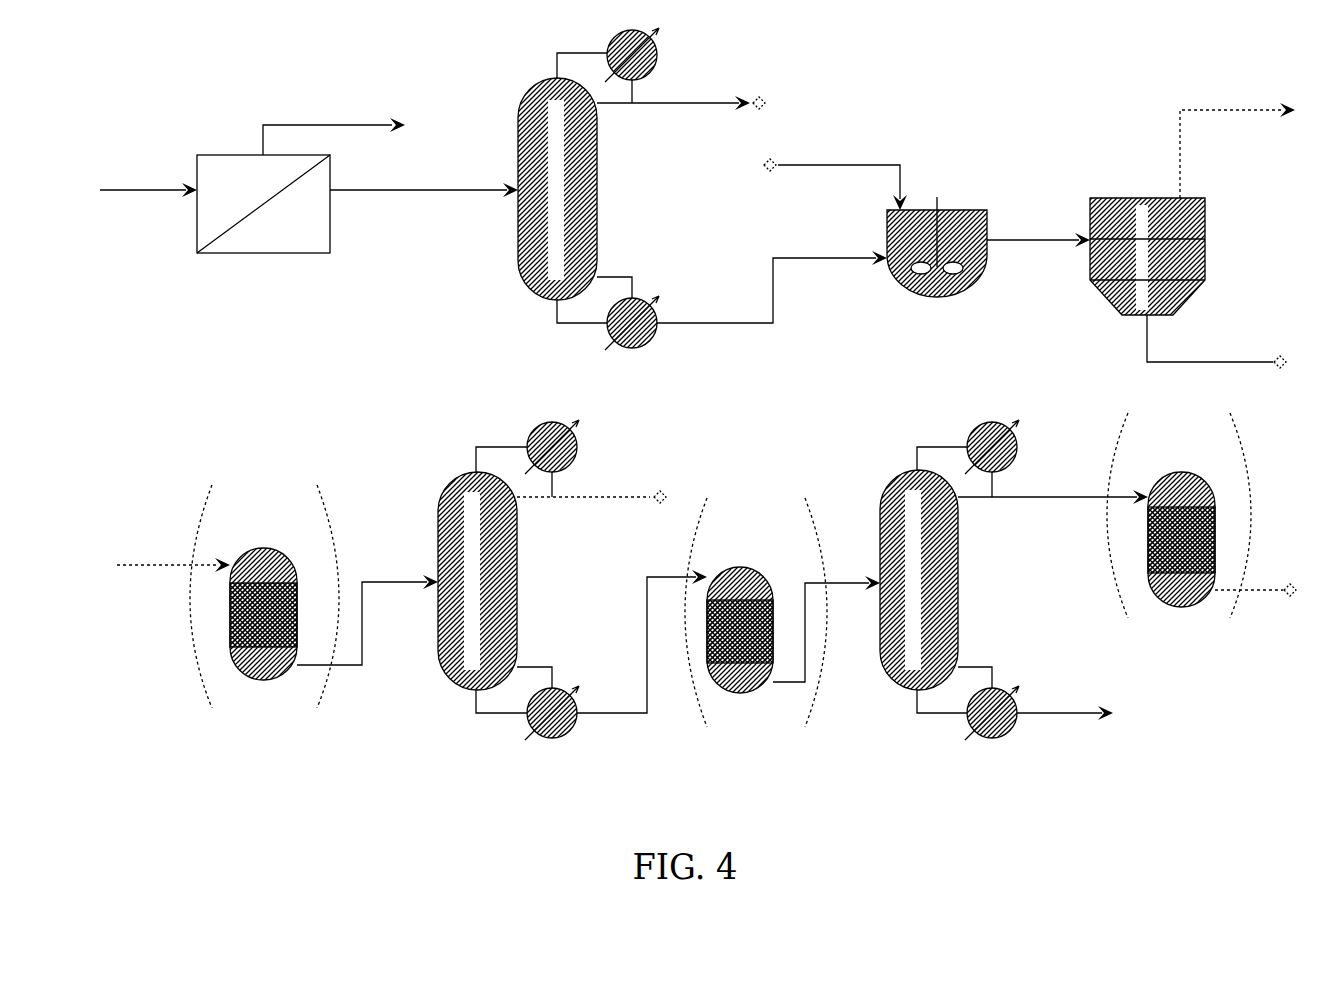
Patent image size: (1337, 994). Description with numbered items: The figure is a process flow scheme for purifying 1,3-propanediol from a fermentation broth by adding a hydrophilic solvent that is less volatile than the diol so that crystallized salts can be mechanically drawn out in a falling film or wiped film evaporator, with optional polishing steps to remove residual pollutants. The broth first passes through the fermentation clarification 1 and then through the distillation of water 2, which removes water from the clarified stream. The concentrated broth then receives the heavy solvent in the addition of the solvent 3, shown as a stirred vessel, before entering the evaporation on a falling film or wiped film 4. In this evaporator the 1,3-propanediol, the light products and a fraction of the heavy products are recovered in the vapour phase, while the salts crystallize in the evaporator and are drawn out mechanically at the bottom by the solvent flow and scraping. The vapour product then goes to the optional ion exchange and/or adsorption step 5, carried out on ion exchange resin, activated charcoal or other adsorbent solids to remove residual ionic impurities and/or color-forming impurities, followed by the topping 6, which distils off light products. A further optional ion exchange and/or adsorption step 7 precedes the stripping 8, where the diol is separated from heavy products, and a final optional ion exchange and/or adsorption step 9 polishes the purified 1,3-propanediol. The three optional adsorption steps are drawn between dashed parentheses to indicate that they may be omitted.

The fermentation clarification 1 is at (263, 160).
The distillation of water 2 is at (638, 189).
The addition of the solvent 3 is at (875, 225).
The evaporation on a falling film or wiped film 4 is at (1192, 235).
The optional ion exchange and/or adsorption step 5 is at (264, 596).
The topping 6 is at (547, 580).
The optional ion exchange and/or adsorption step 7 is at (756, 612).
The stripping 8 is at (993, 580).
The optional ion exchange and/or adsorption step 9 is at (1201, 515).